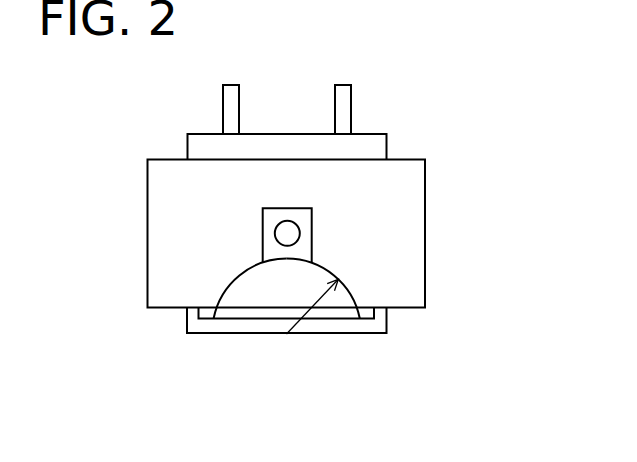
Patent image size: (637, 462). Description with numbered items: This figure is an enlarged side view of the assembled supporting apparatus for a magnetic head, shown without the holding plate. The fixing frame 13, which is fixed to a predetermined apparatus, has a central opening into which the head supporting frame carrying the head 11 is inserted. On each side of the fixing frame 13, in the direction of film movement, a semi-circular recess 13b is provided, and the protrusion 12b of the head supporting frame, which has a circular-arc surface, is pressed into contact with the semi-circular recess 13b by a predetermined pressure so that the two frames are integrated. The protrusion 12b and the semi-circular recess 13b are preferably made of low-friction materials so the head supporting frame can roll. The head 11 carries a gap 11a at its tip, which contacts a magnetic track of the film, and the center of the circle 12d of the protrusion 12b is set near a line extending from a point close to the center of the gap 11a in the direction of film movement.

The fixing frame 13 is at (425, 233).
The semi-circular recess 13b is at (231, 284).
The head 11 is at (387, 321).
The gap 11a is at (207, 334).
The center of the circle 12d is at (287, 334).
The protrusion 12b is at (349, 300).